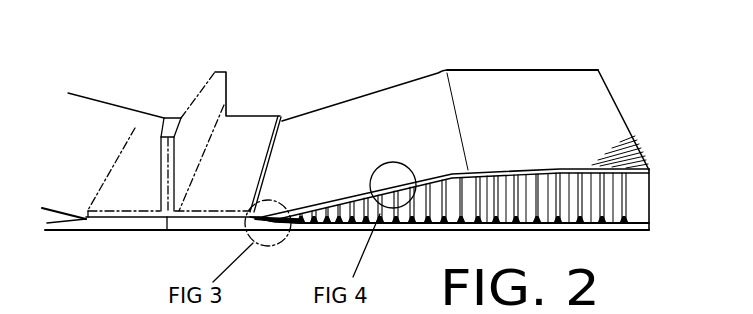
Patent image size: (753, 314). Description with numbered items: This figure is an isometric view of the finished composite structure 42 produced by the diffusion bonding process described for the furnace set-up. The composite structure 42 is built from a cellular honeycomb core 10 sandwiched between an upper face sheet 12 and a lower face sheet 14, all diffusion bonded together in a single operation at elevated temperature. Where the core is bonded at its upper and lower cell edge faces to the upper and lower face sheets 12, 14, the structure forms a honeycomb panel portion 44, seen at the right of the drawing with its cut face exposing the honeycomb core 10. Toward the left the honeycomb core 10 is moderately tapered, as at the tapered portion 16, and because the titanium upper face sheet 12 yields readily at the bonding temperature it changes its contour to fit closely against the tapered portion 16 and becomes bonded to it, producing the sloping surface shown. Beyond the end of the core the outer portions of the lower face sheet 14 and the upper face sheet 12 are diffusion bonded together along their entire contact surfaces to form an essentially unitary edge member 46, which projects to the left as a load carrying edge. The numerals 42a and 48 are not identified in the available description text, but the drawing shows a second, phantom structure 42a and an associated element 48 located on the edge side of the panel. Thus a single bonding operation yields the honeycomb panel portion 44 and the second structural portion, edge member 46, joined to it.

The cellular core 10 is at (645, 196).
The upper face sheet 12 is at (467, 76).
The lower face sheet 14 is at (443, 228).
The tapered portion 16 is at (350, 214).
The composite structure 42 is at (516, 57).
The alternative T-section stiffener (phantom) 42a is at (135, 128).
The honeycomb panel portion 44 is at (571, 73).
The unitary edge member 46 is at (222, 230).
The ramp doubler 48 is at (243, 120).